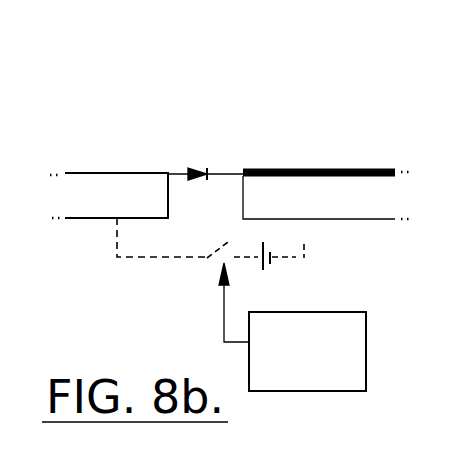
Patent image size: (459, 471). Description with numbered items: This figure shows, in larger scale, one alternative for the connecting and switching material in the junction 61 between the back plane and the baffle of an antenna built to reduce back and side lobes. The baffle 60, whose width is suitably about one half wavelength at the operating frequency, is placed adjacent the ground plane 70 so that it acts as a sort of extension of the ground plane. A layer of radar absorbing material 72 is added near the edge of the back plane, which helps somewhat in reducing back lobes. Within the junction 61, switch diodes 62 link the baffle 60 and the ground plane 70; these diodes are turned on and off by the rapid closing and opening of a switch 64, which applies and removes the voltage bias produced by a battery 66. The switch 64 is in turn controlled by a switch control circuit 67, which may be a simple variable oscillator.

The baffle 60 is at (80, 173).
The junction 61 is at (175, 116).
The switch diodes 62 is at (212, 178).
The switch 64 is at (213, 266).
The battery 66 is at (263, 247).
The switch control circuit 67 is at (332, 312).
The ground plane 70 is at (370, 219).
The layer of radar absorbing material 72 is at (335, 168).